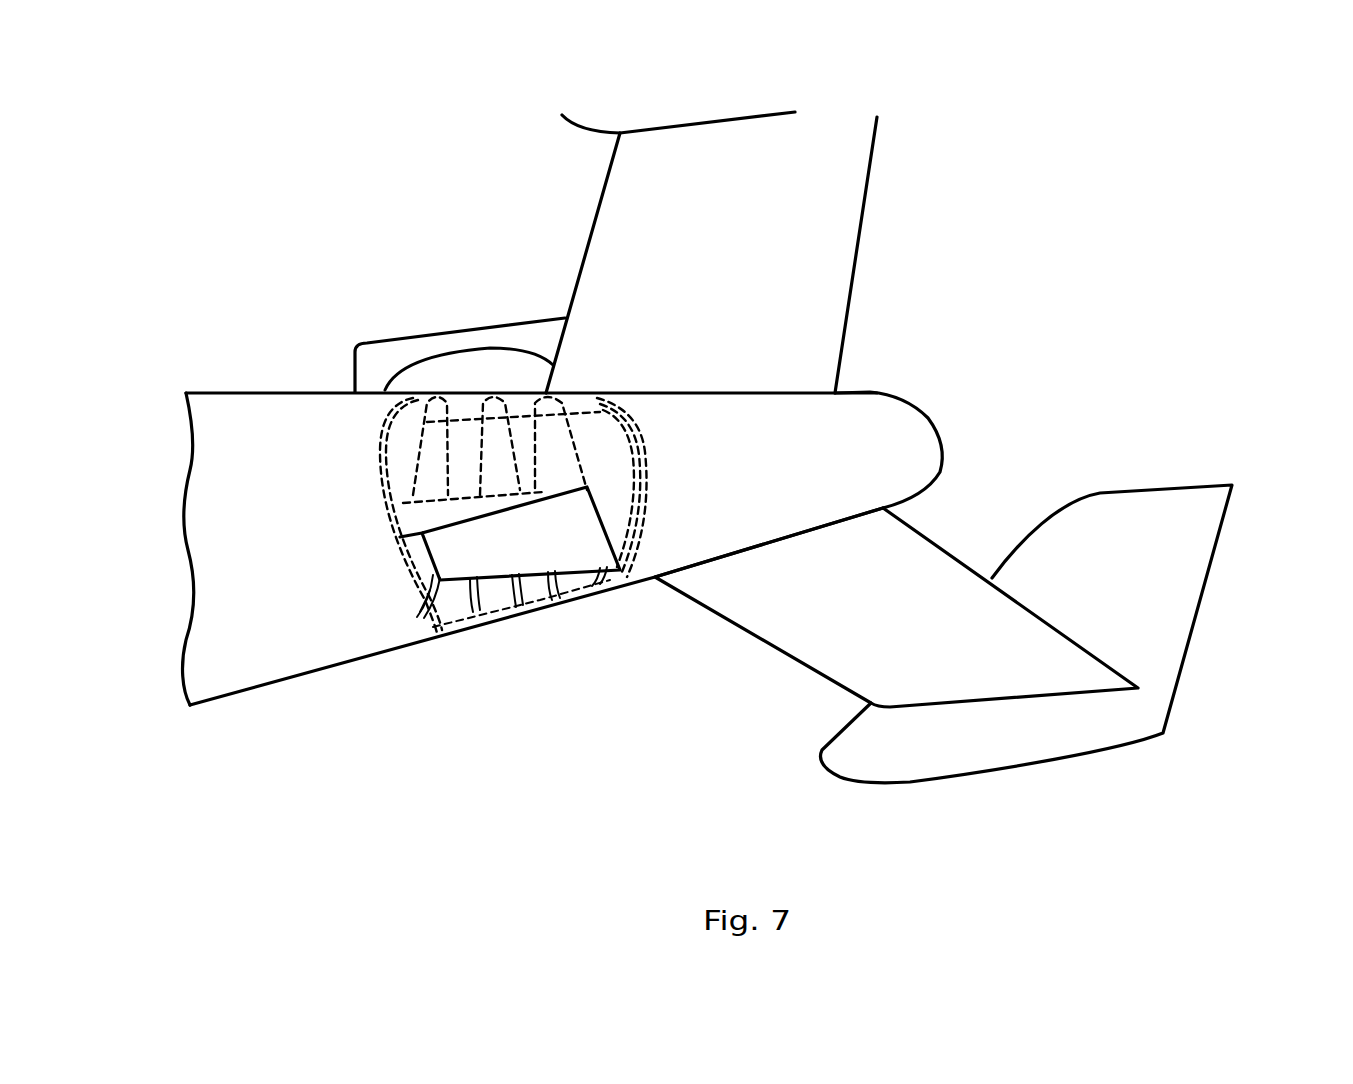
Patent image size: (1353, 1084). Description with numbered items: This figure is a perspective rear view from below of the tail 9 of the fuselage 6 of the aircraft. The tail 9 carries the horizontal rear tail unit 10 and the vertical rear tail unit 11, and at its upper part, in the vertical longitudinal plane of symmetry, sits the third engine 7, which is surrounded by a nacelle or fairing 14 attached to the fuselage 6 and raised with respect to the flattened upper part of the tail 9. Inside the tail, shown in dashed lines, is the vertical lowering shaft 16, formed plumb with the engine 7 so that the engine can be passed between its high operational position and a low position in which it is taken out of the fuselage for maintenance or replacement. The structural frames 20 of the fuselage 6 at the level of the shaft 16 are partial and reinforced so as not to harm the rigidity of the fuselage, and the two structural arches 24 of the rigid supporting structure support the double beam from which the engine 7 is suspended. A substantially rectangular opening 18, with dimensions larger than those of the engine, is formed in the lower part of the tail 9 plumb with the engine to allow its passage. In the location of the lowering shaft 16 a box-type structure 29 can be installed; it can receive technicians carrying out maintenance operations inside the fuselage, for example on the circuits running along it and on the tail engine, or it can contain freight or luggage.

The fuselage 6 is at (180, 423).
The engine 7 is at (513, 352).
The tail 9 is at (890, 425).
The horizontal rear tail unit 10 is at (932, 540).
The vertical rear tail unit 11 is at (1190, 573).
The nacelle 14 is at (382, 342).
The lowering shaft 16 is at (495, 592).
The opening 18 is at (420, 613).
The structural frames 20 is at (413, 493).
The structural arches 24 is at (499, 450).
The box-type structure 29 is at (543, 537).